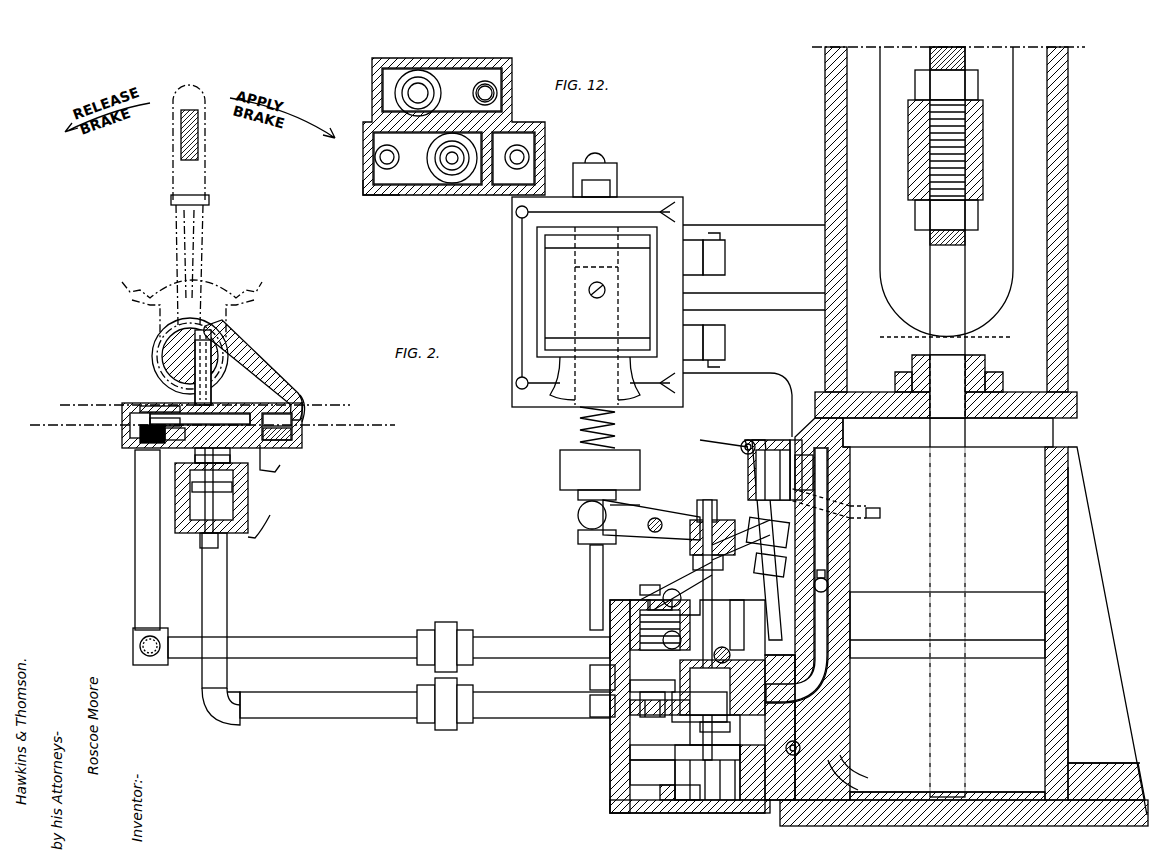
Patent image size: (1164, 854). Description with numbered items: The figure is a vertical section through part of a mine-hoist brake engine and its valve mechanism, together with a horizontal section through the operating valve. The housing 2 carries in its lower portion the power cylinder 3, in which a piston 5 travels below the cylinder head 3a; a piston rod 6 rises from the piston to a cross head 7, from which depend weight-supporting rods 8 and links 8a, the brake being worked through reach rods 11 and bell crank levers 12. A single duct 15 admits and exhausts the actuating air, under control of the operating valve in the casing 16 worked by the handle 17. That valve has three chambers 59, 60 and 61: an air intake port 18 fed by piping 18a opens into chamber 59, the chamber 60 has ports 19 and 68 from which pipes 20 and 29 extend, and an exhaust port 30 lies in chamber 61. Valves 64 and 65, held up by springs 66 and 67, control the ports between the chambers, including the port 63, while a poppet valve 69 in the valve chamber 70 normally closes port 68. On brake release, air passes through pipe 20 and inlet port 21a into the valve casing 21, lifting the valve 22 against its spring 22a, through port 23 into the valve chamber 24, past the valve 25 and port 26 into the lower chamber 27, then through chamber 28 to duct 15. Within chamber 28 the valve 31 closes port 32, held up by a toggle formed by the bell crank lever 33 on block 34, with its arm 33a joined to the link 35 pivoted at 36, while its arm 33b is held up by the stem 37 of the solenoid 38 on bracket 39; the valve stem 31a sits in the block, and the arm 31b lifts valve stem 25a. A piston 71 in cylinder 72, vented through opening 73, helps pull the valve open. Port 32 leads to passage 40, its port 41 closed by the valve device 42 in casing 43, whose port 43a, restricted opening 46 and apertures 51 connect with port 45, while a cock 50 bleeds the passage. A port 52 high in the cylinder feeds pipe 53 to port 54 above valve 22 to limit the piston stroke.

In FIG. 2, the housing 2 is at (825, 135).
In FIG. 2, the power cylinder 3 is at (1045, 680).
In FIG. 2, the cylinder head 3a is at (1008, 418).
In FIG. 2, the piston 5 is at (1027, 595).
In FIG. 2, the piston rod 6 is at (930, 62).
In FIG. 2, the cross head 7 is at (983, 185).
In FIG. 2, the weight-supporting rods 8 is at (966, 262).
In FIG. 2, the links 8a is at (966, 62).
In FIG. 2, the reach rods 11 is at (205, 396).
In FIG. 2, the bell crank levers 12 is at (202, 426).
In FIG. 2, the port or duct 15 is at (858, 784).
In FIG. 12, the valve casing 16 is at (372, 115).
In FIG. 2, the valve casing 16 is at (255, 372).
In FIG. 2, the operating handle 17 is at (202, 186).
In FIG. 12, the air intake port 18 is at (510, 75).
In FIG. 12, the piping 18a is at (490, 100).
In FIG. 2, the piping 18a is at (270, 528).
In FIG. 12, the port 19 is at (385, 158).
In FIG. 2, the port 19 is at (165, 432).
In FIG. 12, the pipe 20 is at (384, 172).
In FIG. 2, the pipe 20 is at (150, 510).
In FIG. 2, the valve casing 21 is at (630, 605).
In FIG. 2, the inlet port 21a is at (668, 638).
In FIG. 2, the valve 22 is at (630, 620).
In FIG. 2, the spring 22a is at (648, 585).
In FIG. 2, the port 23 is at (590, 676).
In FIG. 2, the valve chamber 24 is at (632, 690).
In FIG. 2, the valve 25 is at (590, 701).
In FIG. 2, the valve stem 25a is at (699, 707).
In FIG. 2, the port 26 is at (640, 735).
In FIG. 2, the lower chamber 27 is at (630, 755).
In FIG. 2, the chamber 28 is at (735, 800).
In FIG. 2, the pipe 29 is at (227, 573).
In FIG. 12, the exhaust port 30 is at (518, 156).
In FIG. 2, the exhaust port 30 is at (292, 432).
In FIG. 2, the valve 31 is at (640, 775).
In FIG. 2, the valve stem 31a is at (707, 500).
In FIG. 2, the arm 31b is at (630, 768).
In FIG. 2, the port 32 is at (740, 715).
In FIG. 2, the bell crank lever 33 is at (651, 517).
In FIG. 2, the arm 33a is at (741, 540).
In FIG. 2, the arm 33b is at (622, 510).
In FIG. 2, the block 34 is at (722, 525).
In FIG. 2, the link 35 is at (745, 612).
In FIG. 2, the pivot 36 is at (732, 652).
In FIG. 2, the stem 37 is at (590, 553).
In FIG. 2, the solenoid 38 is at (545, 290).
In FIG. 2, the bracket 39 is at (758, 226).
In FIG. 2, the passage 40 is at (803, 670).
In FIG. 2, the port 41 is at (814, 472).
In FIG. 2, the valve device 42 is at (768, 450).
In FIG. 2, the casing 43 is at (767, 540).
In FIG. 2, the port 43a is at (745, 443).
In FIG. 2, the port 45 is at (796, 755).
In FIG. 2, the restricted opening 46 is at (741, 447).
In FIG. 2, the cock 50 is at (828, 585).
In FIG. 2, the apertures 51 is at (785, 440).
In FIG. 2, the port 52 is at (880, 513).
In FIG. 2, the pipe 53 is at (695, 585).
In FIG. 2, the port 54 is at (674, 588).
In FIG. 12, the chamber 59 is at (390, 73).
In FIG. 2, the chamber 59 is at (270, 395).
In FIG. 12, the chamber 60 is at (395, 140).
In FIG. 2, the chamber 60 is at (140, 426).
In FIG. 12, the chamber 61 is at (530, 136).
In FIG. 2, the chamber 61 is at (292, 418).
In FIG. 2, the port 63 is at (232, 352).
In FIG. 2, the valve 64 is at (150, 410).
In FIG. 2, the valve 65 is at (208, 415).
In FIG. 12, the spring 66 is at (416, 95).
In FIG. 2, the spring 66 is at (195, 400).
In FIG. 12, the spring 67 is at (452, 166).
In FIG. 2, the spring 67 is at (195, 460).
In FIG. 12, the port 68 is at (445, 165).
In FIG. 2, the port 68 is at (276, 480).
In FIG. 12, the poppet valve 69 is at (458, 165).
In FIG. 2, the poppet valve 69 is at (192, 485).
In FIG. 2, the valve chamber 70 is at (248, 500).
In FIG. 2, the piston 71 is at (665, 805).
In FIG. 2, the cylinder 72 is at (752, 815).
In FIG. 2, the opening 73 is at (685, 805).